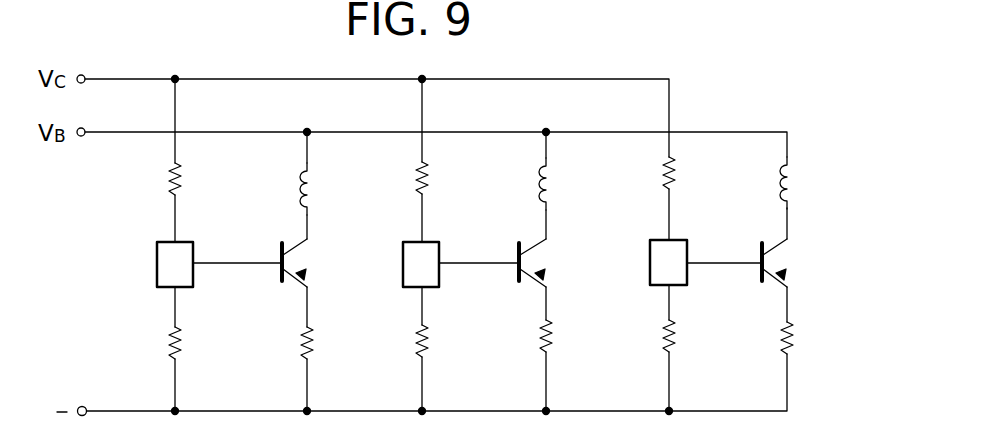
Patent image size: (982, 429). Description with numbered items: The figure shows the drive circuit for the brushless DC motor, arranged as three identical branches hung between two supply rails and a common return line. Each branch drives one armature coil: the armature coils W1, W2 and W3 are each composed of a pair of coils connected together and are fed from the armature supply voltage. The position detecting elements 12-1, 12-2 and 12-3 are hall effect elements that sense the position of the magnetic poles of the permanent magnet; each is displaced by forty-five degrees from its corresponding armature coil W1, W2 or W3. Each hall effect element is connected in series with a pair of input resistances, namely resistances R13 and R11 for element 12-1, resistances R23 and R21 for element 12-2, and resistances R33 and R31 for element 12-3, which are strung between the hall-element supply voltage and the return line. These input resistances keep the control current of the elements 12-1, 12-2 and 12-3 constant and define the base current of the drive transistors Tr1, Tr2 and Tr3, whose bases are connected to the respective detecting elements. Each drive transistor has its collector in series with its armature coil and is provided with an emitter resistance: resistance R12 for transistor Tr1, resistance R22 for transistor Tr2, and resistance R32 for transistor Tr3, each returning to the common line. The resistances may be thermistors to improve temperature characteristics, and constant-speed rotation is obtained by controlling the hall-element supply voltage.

The input resistance R11 is at (181, 345).
The emitter resistance R12 is at (313, 344).
The input resistance R13 is at (181, 181).
The input resistance R21 is at (428, 342).
The emitter resistance R22 is at (552, 335).
The input resistance R23 is at (428, 180).
The input resistance R31 is at (675, 333).
The emitter resistance R32 is at (781, 343).
The input resistance R33 is at (675, 177).
The armature coil W1 is at (315, 181).
The armature coil W2 is at (554, 178).
The armature coil W3 is at (779, 190).
The drive transistor Tr1 is at (298, 263).
The drive transistor Tr2 is at (535, 263).
The drive transistor Tr3 is at (779, 262).
The position detecting element 12-1 is at (157, 265).
The position detecting element 12-2 is at (403, 275).
The position detecting element 12-3 is at (650, 272).